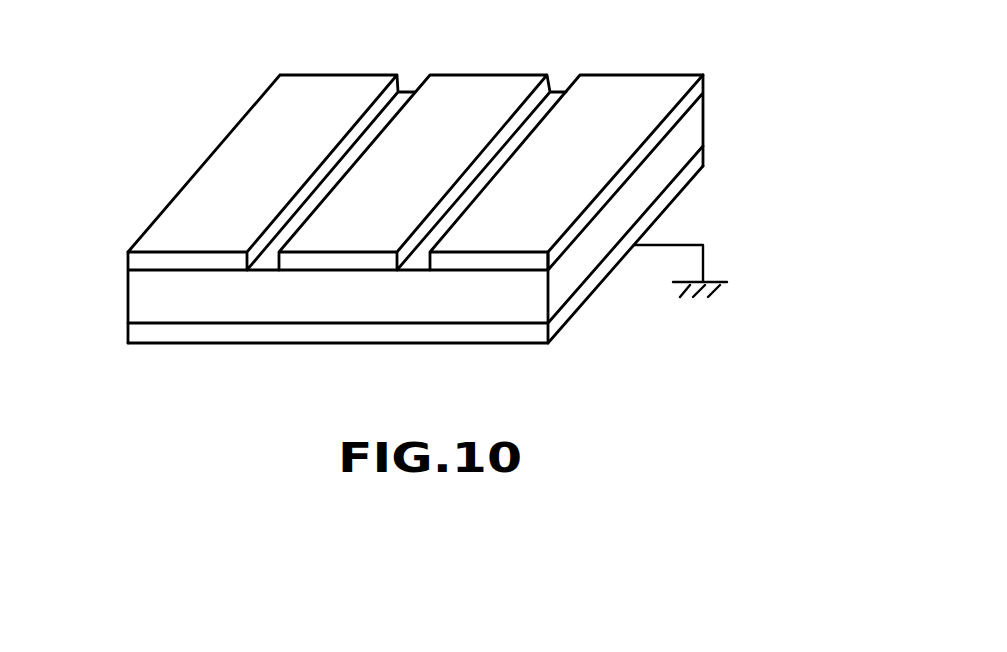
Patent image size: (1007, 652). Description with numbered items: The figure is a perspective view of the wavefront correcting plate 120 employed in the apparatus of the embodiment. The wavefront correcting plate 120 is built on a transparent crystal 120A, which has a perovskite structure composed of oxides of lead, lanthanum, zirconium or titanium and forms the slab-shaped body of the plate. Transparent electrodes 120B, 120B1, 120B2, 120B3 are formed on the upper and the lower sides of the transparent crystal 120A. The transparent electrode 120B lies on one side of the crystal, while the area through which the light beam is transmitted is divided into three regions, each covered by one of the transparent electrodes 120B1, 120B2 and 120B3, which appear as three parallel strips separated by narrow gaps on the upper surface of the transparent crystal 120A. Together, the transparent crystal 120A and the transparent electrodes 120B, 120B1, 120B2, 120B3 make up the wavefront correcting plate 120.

The wavefront correcting plate 120 is at (435, 191).
The transparent crystal 120A is at (153, 290).
The transparent electrode 120B is at (480, 191).
The transparent electrode 120B1 is at (677, 82).
The transparent electrode 120B2 is at (527, 78).
The transparent electrode 120B3 is at (277, 102).